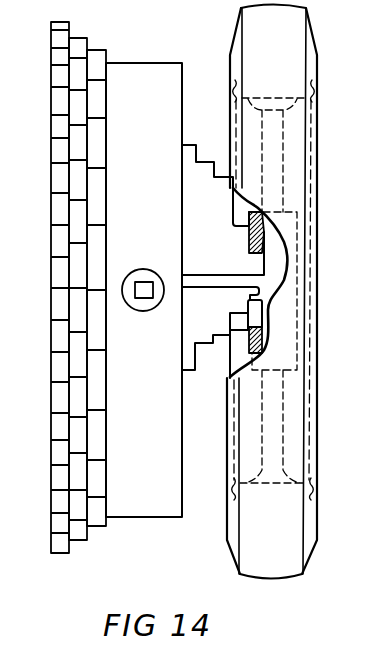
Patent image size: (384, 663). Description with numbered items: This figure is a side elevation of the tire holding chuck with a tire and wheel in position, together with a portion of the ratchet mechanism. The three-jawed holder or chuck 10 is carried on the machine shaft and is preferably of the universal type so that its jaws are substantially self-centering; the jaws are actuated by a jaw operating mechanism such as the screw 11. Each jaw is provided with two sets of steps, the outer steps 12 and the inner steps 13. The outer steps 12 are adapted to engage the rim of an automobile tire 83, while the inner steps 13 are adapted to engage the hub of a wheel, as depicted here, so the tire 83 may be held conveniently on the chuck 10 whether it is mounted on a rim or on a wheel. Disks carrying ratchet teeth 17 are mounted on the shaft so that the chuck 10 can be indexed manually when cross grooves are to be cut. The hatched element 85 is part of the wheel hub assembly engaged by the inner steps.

The three-jawed holder or chuck 10 is at (144, 290).
The screw 11 is at (137, 298).
The outer steps 12 is at (205, 160).
The inner steps 13 is at (252, 292).
The ratchet teeth 17 is at (57, 252).
The automobile tire 83 is at (289, 45).
The bearing 85 is at (260, 247).